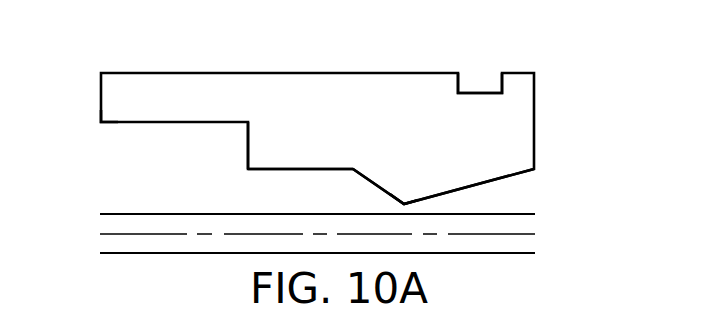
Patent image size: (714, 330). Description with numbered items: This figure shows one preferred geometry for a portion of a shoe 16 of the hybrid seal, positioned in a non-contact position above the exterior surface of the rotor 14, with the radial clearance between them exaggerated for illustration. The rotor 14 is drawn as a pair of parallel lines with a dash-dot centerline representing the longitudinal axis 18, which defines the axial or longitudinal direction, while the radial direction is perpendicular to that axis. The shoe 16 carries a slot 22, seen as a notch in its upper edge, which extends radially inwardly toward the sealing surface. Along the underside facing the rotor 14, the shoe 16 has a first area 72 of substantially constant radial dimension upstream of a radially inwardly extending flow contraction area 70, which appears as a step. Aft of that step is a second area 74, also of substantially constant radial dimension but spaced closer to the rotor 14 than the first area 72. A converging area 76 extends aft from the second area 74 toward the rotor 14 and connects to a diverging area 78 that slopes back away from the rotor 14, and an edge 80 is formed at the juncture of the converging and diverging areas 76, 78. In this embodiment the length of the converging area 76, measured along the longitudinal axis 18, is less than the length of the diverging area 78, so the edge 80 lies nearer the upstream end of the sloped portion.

The rotor 14 is at (122, 253).
The shoe 16 is at (569, 105).
The longitudinal axis 18 is at (160, 235).
The slot 22 is at (478, 82).
The flow contraction area 70 is at (246, 132).
The first area 72 is at (109, 123).
The second area 74 is at (260, 170).
The converging area 76 is at (368, 181).
The diverging area 78 is at (508, 177).
The edge 80 is at (405, 202).